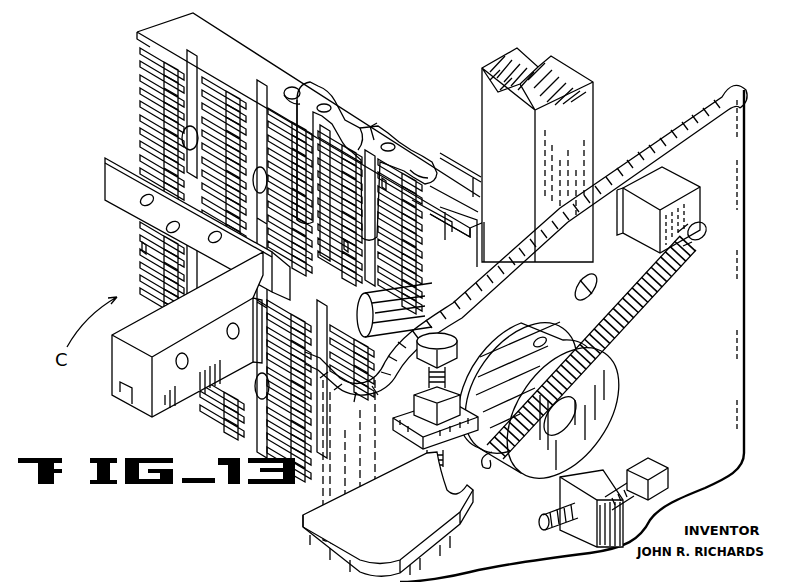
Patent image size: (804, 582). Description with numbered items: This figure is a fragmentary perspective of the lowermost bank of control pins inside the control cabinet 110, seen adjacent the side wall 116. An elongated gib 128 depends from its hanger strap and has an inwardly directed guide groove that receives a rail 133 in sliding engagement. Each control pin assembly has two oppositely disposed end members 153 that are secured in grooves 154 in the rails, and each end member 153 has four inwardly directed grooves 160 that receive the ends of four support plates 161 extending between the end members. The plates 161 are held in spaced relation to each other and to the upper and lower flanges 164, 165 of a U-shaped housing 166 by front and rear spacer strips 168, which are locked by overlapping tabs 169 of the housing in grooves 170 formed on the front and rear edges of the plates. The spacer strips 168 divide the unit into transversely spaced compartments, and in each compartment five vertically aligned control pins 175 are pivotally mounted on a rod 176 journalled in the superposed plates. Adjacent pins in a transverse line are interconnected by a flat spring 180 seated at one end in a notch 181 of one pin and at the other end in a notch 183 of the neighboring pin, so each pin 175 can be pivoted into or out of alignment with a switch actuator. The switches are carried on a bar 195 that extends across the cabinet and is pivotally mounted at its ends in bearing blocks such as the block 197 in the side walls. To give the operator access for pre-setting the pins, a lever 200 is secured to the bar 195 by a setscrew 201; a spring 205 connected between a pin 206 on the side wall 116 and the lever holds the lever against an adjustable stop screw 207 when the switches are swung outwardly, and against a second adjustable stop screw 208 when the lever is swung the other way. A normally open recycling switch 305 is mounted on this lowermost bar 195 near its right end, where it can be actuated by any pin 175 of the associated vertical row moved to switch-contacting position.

The control cabinet 110 is at (754, 287).
The side wall 116 is at (703, 341).
The gib 128 is at (537, 143).
The rail 133 is at (522, 53).
The end member 153 is at (466, 228).
The groove 154 is at (476, 231).
The groove 160 is at (486, 281).
The support plate 161 is at (140, 92).
The upper flange 164 is at (251, 241).
The lower flange 165 is at (140, 108).
The U-shaped housing 166 is at (251, 37).
The spacer strip 168 is at (262, 104).
The tab 169 is at (199, 68).
The groove 170 is at (196, 70).
The control pin 175 is at (382, 198).
The rod 176 is at (330, 144).
The flat spring 180 is at (283, 110).
The notch 181 is at (340, 114).
The notch 183 is at (311, 95).
The bar 195 is at (131, 148).
The bearing block 197 is at (440, 316).
The lever 200 is at (420, 513).
The setscrew 201 is at (540, 334).
The spring 205 is at (640, 298).
The pin 206 is at (694, 252).
The adjustable stop screw 207 is at (427, 463).
The second adjustable stop screw 208 is at (641, 458).
The recycling switch 305 is at (205, 325).